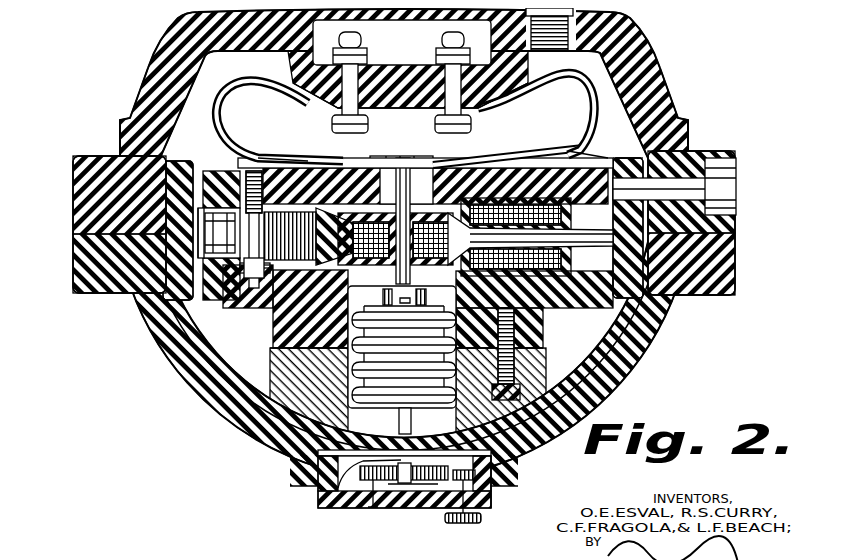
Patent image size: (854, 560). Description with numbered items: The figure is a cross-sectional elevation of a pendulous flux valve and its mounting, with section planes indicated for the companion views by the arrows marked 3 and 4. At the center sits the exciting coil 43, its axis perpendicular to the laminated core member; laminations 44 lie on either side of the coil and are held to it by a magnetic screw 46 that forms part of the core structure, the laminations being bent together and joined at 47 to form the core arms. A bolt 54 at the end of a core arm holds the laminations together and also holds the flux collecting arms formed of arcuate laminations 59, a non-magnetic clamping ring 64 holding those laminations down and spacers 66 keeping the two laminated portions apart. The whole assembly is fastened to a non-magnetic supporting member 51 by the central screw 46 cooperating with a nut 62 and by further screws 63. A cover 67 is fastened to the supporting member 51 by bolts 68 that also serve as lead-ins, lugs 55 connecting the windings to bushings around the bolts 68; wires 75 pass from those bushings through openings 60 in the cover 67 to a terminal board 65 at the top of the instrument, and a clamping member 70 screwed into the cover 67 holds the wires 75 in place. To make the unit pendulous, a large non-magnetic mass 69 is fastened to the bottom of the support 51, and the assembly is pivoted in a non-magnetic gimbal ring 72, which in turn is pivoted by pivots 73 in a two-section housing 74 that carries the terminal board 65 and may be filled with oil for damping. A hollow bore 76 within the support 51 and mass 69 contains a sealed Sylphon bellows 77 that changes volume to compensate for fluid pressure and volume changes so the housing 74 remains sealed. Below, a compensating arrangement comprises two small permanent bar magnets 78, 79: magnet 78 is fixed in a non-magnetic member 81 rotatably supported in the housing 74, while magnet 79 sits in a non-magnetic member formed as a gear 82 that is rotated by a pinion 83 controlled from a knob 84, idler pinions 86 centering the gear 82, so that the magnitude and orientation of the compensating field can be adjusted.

The section line 3- 3 is at (65, 199).
The section line 4- 4 is at (282, 457).
The exciting coil 43 is at (450, 152).
The laminations 44 is at (312, 158).
The screw 46 is at (258, 305).
The joint of laminations 47 is at (268, 150).
The supporting member 51 is at (530, 308).
The bolt 54 is at (606, 150).
The lugs 55 is at (226, 302).
The arcuate laminations 59 is at (208, 284).
The openings 60 is at (418, 150).
The nut 62 is at (372, 288).
The screws 63 is at (212, 295).
The clamping ring 64 is at (142, 300).
The terminal board 65 is at (385, 52).
The spacers 66 is at (158, 332).
The cover 67 is at (505, 156).
The bolts 68 is at (228, 158).
The non-magnetic mass 69 is at (515, 364).
The clamping member 70 is at (402, 281).
The gimbal ring 72 is at (163, 152).
The pivots 73 is at (712, 148).
The housing 74 is at (668, 84).
The wires 75 is at (222, 84).
The hollow bore 76 is at (275, 358).
The Sylphon bellows 77 is at (275, 376).
The permanent bar magnet 78 is at (408, 498).
The permanent bar magnet 79 is at (308, 480).
The non-magnetic member 81 is at (343, 502).
The gear 82 is at (434, 502).
The pinion 83 is at (490, 496).
The knob 84 is at (460, 516).
The idler pinions 86 is at (330, 482).